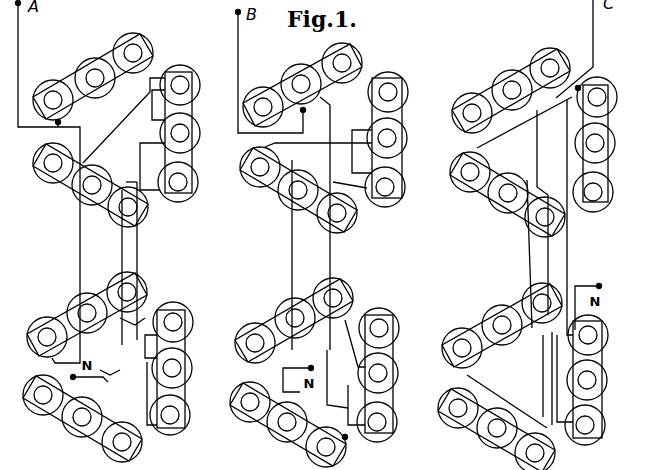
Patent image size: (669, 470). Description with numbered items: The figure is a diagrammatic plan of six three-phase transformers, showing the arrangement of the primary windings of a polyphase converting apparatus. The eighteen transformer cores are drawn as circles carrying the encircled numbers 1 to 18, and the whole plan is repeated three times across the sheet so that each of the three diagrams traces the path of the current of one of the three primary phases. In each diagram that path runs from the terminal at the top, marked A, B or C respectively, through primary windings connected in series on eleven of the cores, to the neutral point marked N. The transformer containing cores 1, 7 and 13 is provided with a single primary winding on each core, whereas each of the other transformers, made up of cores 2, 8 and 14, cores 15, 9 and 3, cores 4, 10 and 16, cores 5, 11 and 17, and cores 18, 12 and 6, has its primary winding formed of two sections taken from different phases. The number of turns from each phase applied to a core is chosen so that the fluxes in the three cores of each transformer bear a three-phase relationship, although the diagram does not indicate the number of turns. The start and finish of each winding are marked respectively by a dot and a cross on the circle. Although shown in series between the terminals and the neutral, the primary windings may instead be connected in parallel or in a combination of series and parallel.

The core 1 is at (262, 106).
The core 2 is at (388, 91).
The core 3 is at (336, 212).
The core 4 is at (254, 342).
The core 5 is at (380, 328).
The core 6 is at (328, 446).
The core 7 is at (303, 84).
The core 8 is at (387, 138).
The core 9 is at (300, 189).
The core 10 is at (294, 319).
The core 11 is at (379, 374).
The core 12 is at (289, 422).
The core 13 is at (341, 60).
The core 14 is at (385, 187).
The core 15 is at (261, 167).
The core 16 is at (334, 297).
The core 17 is at (377, 420).
The core 18 is at (250, 401).